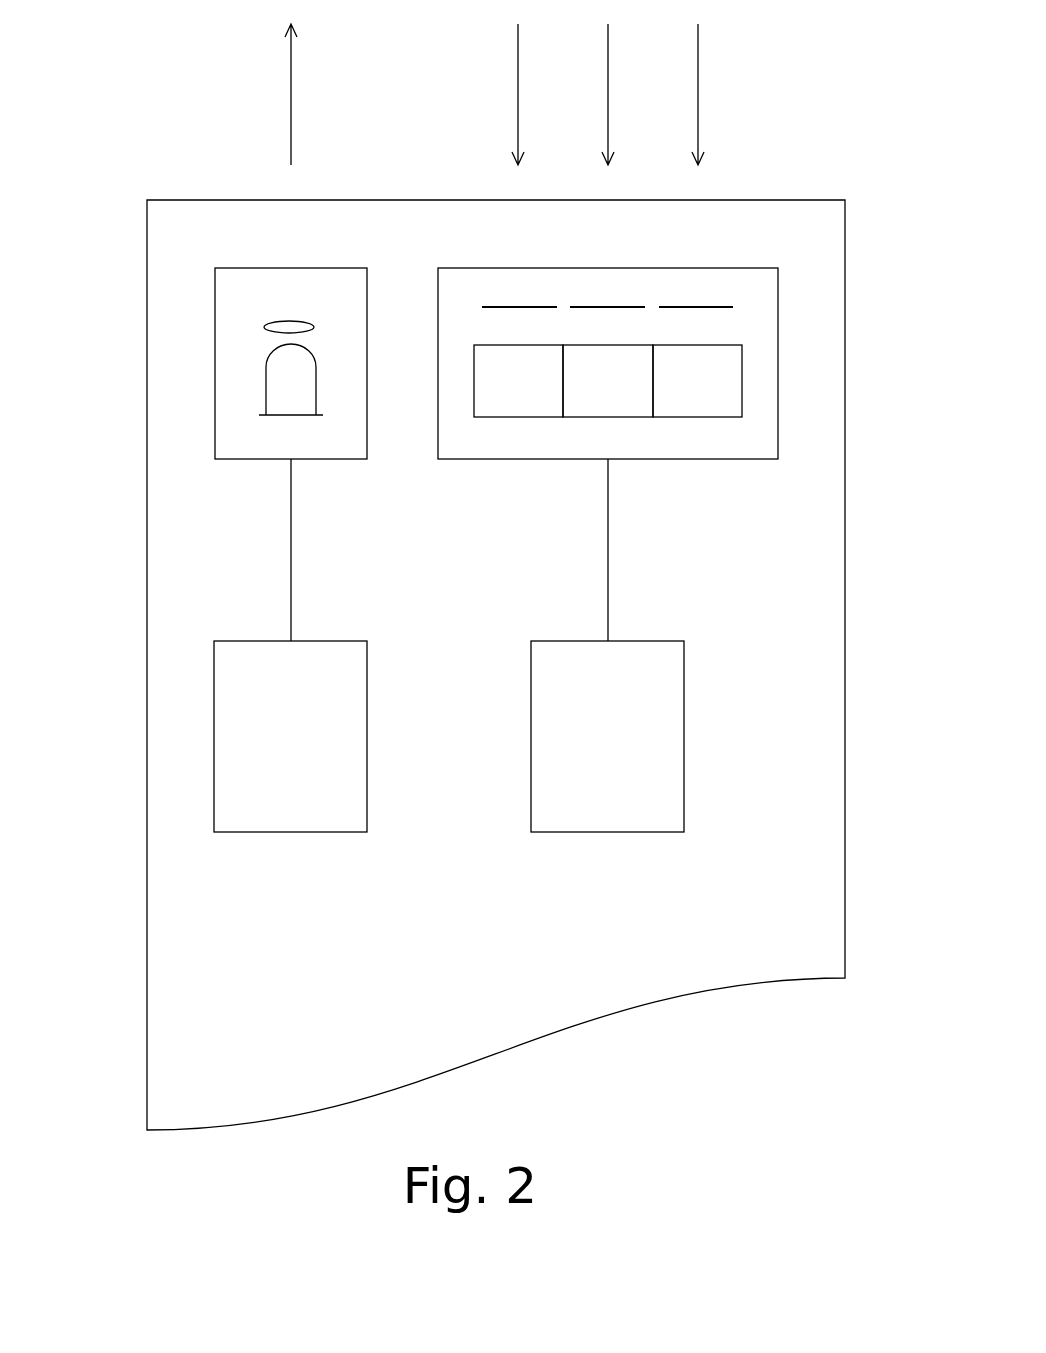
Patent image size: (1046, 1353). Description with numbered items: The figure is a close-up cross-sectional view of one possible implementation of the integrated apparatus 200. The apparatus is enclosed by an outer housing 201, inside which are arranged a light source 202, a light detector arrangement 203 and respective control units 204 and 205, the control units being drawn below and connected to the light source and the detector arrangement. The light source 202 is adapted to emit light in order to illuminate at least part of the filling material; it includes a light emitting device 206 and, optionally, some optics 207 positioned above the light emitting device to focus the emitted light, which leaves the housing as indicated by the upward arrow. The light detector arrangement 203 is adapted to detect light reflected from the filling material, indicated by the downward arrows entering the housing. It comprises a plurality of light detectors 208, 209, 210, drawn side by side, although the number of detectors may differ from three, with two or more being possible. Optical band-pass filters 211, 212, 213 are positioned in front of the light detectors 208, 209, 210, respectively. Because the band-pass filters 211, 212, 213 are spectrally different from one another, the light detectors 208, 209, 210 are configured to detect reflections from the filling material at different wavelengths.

The integrated apparatus 200 is at (503, 577).
The outer housing 201 is at (845, 551).
The light source 202 is at (270, 430).
The light detector arrangement 203 is at (625, 423).
The control unit 204 is at (330, 753).
The control unit 205 is at (662, 753).
The light emitting device 206 is at (280, 382).
The optics 207 is at (290, 318).
The light detector 208 is at (692, 403).
The light detector 209 is at (600, 403).
The light detector 210 is at (507, 403).
The optical band-pass filter 211 is at (696, 305).
The optical band-pass filter 212 is at (608, 305).
The optical band-pass filter 213 is at (520, 305).